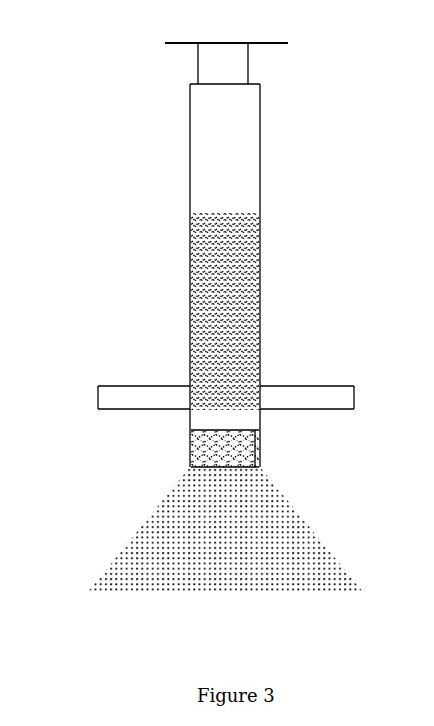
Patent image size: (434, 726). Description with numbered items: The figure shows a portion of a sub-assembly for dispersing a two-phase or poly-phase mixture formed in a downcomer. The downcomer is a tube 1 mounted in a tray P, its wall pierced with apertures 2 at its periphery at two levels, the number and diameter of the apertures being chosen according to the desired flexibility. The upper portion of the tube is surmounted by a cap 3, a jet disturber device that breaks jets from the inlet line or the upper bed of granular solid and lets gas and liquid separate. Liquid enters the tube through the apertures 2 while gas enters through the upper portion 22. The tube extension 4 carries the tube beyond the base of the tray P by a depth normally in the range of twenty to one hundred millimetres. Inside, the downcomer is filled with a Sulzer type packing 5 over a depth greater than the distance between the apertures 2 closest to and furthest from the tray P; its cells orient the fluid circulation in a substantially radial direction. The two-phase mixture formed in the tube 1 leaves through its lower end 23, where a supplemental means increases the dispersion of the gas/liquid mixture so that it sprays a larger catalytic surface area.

The tube 1 is at (261, 145).
The apertures 2 is at (261, 278).
The cap 3 is at (248, 43).
The tube extension 4 is at (262, 418).
The packing 5 is at (210, 280).
The upper portion 22 is at (230, 101).
The lower end 23 is at (223, 466).
The tray P is at (301, 392).